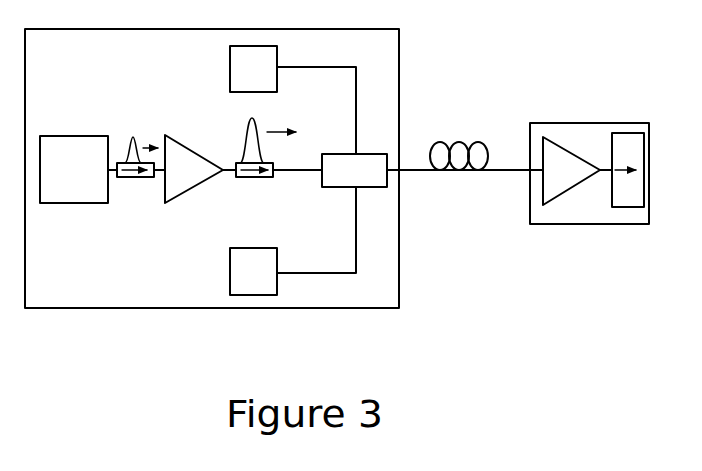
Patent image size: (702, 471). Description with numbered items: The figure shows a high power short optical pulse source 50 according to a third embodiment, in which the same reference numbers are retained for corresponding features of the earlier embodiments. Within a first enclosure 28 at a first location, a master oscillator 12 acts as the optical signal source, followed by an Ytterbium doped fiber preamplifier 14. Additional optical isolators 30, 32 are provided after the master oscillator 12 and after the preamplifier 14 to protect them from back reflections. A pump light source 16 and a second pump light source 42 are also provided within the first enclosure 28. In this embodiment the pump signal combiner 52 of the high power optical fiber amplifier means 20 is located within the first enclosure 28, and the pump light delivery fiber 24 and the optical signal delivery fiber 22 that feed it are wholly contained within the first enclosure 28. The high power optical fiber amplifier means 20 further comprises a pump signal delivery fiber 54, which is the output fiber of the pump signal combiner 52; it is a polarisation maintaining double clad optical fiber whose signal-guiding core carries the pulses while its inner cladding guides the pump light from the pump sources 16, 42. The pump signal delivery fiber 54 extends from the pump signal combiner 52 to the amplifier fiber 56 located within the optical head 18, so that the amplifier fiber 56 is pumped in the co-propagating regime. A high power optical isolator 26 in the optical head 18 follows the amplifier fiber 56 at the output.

The master oscillator 12 is at (73, 203).
The preamplifier 14 is at (188, 177).
The pump light source 16 is at (250, 68).
The optical head 18 is at (589, 177).
The high power optical fiber amplifier means 20 is at (502, 247).
The optical signal delivery fiber 22 is at (295, 170).
The pump light delivery fiber 24 is at (356, 96).
The high power optical isolator 26 is at (628, 133).
The first enclosure 28 is at (363, 308).
The optical isolator 30 is at (133, 177).
The optical isolator 32 is at (253, 177).
The second pump light source 42 is at (250, 275).
The high power short optical pulse source 50 is at (106, 326).
The pump signal combiner 52 is at (358, 158).
The pump signal delivery fiber 54 is at (490, 170).
The amplifier fiber 56 is at (563, 166).